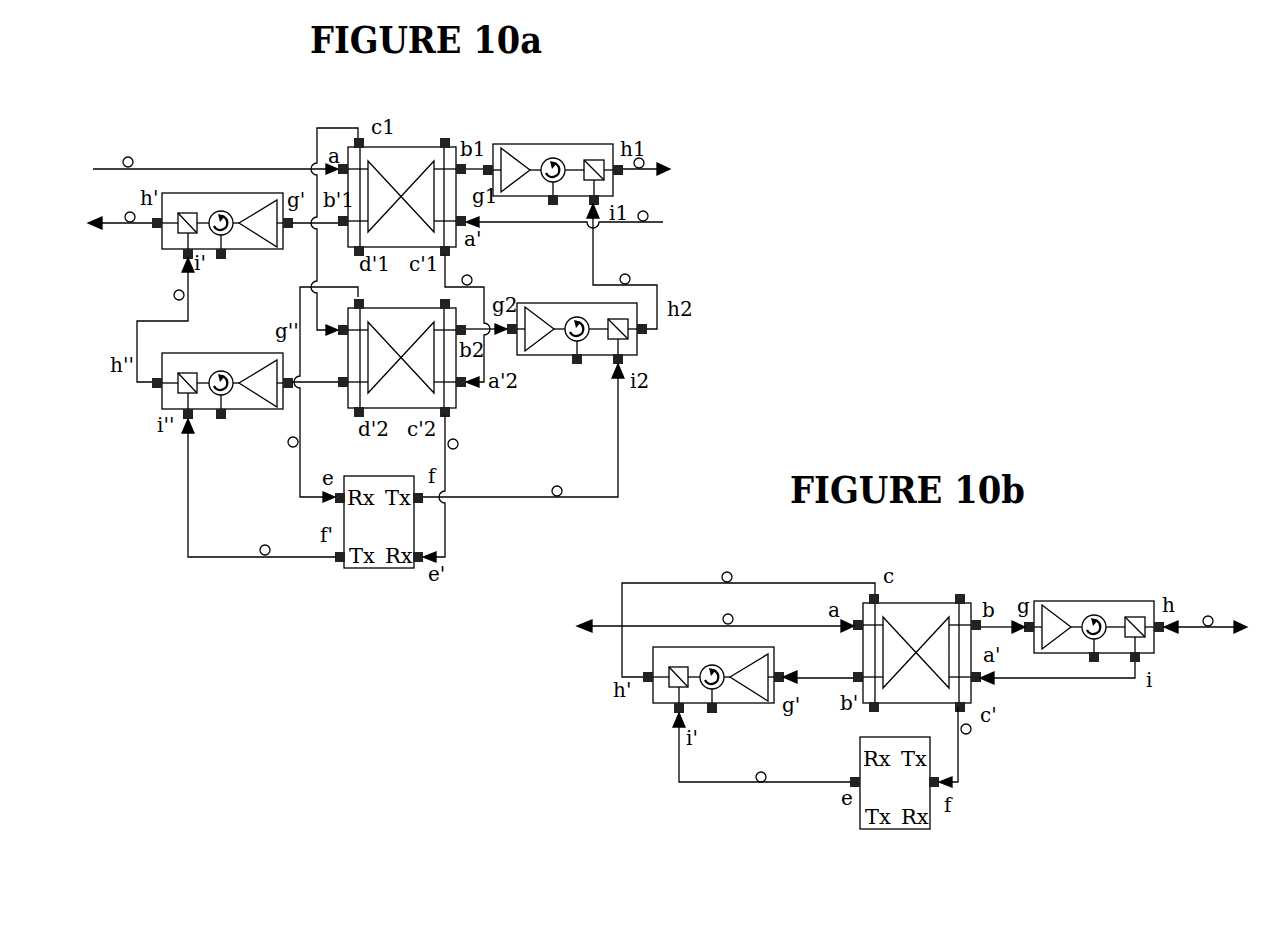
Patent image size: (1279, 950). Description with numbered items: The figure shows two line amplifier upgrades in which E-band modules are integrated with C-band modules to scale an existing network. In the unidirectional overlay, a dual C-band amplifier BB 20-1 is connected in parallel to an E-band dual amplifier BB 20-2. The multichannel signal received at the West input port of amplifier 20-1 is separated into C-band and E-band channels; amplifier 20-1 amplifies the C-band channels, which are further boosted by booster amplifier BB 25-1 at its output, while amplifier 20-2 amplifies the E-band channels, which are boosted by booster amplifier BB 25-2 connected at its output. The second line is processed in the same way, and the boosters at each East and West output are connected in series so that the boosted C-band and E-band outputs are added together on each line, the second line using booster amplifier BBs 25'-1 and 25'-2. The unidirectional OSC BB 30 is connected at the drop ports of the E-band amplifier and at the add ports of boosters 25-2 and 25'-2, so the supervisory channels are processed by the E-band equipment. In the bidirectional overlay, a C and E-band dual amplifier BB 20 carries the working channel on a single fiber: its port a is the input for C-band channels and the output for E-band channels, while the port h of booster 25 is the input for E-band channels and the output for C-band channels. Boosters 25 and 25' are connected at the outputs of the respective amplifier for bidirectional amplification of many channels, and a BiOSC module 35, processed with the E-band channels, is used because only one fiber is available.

In FIG. 10A, the dual C-band amplifier BB 20-1 is at (395, 146).
In FIG. 10A, the E-band dual amplifier BB 20-2 is at (458, 398).
In FIG. 10A, the booster amplifier BB 25-1 is at (575, 144).
In FIG. 10A, the booster amplifier BB 25-2 is at (640, 355).
In FIG. 10A, the booster amplifier BB 25'-1 is at (185, 244).
In FIG. 10A, the booster amplifier BB 25'-2 is at (194, 418).
In FIG. 10A, the unidirectional OSC BB 30 is at (383, 570).
In FIG. 10B, the C and E-band dual amplifier BB 20 is at (908, 603).
In FIG. 10B, the booster amplifier BB 25 is at (1111, 599).
In FIG. 10B, the booster amplifier BB 25' is at (690, 717).
In FIG. 10B, the BiOSC module 35 is at (893, 832).